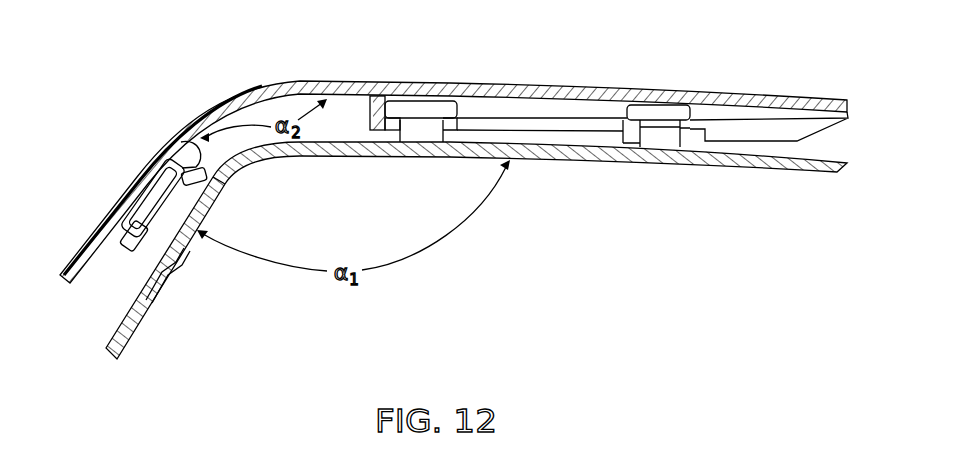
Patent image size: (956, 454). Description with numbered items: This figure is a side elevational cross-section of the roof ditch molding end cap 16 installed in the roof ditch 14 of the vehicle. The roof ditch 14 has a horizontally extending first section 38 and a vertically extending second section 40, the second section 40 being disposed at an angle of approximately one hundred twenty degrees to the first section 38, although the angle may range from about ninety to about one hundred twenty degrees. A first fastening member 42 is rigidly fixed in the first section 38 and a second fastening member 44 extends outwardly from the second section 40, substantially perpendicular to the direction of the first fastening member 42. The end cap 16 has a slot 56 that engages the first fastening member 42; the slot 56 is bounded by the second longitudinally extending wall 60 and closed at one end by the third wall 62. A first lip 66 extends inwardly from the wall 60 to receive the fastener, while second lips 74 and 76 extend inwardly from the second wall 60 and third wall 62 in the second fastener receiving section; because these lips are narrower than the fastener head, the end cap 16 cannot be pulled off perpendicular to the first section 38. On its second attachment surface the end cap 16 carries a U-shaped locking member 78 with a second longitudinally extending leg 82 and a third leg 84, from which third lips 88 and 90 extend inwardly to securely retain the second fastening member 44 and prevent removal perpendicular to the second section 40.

The roof ditch 14 is at (764, 142).
The roof ditch molding end cap 16 is at (240, 86).
The first section 38 is at (557, 158).
The second section 40 is at (193, 237).
The first fastening member 42 is at (457, 111).
The second fastening member 44 is at (156, 258).
The slot 56 is at (797, 122).
The second longitudinally extending wall 60 is at (584, 110).
The third wall 62 is at (370, 112).
The first lip 66 is at (630, 128).
The second lip 74 is at (455, 127).
The second lip 76 is at (382, 132).
The locking member 78 is at (116, 246).
The second longitudinally extending leg 82 is at (118, 204).
The third leg 84 is at (183, 137).
The third lip 88 is at (142, 238).
The third lip 90 is at (215, 197).